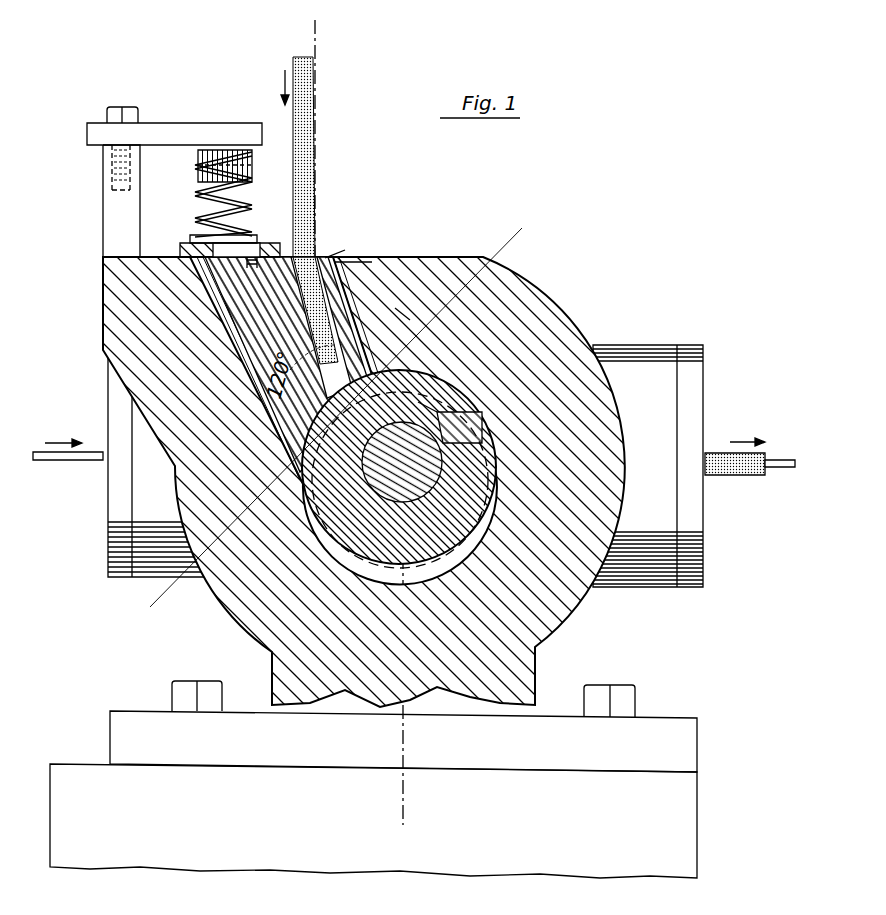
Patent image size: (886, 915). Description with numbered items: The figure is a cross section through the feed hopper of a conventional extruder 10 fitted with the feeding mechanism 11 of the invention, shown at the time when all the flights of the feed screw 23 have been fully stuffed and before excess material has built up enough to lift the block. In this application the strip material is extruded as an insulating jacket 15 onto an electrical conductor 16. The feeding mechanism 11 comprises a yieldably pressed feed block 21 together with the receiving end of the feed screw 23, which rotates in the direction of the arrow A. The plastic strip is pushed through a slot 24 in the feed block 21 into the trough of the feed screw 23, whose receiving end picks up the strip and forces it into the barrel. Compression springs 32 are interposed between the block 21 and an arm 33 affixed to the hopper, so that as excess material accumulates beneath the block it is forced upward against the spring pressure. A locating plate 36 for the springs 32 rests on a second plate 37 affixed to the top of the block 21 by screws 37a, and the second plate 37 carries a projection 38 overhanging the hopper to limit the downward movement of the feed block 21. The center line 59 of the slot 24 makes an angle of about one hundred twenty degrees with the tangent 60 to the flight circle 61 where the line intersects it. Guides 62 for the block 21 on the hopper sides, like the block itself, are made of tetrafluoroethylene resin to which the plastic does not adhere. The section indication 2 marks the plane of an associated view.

The section line 2- 2 is at (300, 33).
The extruder 10 is at (98, 252).
The feeding mechanism 11 is at (346, 240).
The insulating jacket 15 is at (722, 472).
The conductor 16 is at (68, 459).
The feed block 21 is at (385, 245).
The feed screw 23 is at (478, 492).
The slot 24 is at (318, 257).
The compression springs 32 is at (196, 162).
The arm 33 is at (190, 118).
The locating plate 36 is at (192, 236).
The second plate 37 is at (272, 250).
The screws 37a is at (212, 292).
The projection 38 is at (182, 250).
The center line 59 is at (262, 168).
The tangent 60 is at (516, 232).
The flight circle 61 is at (470, 368).
The guides 62 is at (397, 301).
The arrow A is at (405, 467).